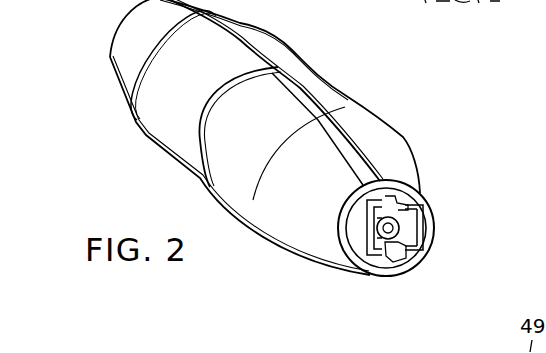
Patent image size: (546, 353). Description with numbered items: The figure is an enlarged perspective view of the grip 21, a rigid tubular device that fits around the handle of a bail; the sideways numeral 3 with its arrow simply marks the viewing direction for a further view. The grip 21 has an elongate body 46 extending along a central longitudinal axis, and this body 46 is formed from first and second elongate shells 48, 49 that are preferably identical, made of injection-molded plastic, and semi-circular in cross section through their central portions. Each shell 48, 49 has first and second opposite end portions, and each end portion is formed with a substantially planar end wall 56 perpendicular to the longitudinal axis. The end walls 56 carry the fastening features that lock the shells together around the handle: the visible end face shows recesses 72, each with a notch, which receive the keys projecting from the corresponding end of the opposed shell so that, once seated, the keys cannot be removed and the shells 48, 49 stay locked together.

The grip 21 is at (440, 133).
The section indicator / end cap 3 is at (80, 83).
The elongate body 46 is at (290, 35).
The first elongate shell 48 is at (403, 137).
The second elongate shell 49 is at (300, 270).
The end wall 56 is at (395, 258).
The recess 72 is at (405, 203).